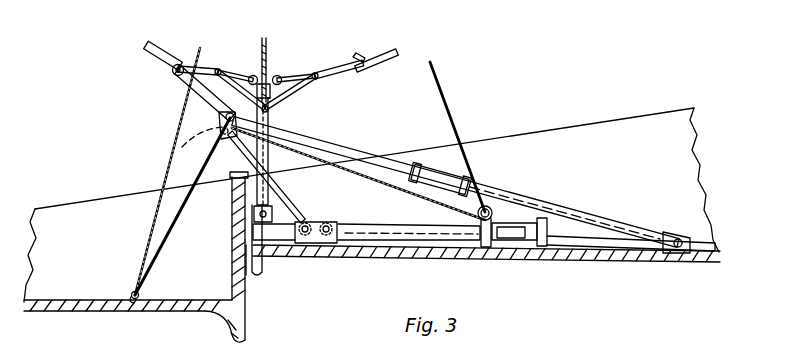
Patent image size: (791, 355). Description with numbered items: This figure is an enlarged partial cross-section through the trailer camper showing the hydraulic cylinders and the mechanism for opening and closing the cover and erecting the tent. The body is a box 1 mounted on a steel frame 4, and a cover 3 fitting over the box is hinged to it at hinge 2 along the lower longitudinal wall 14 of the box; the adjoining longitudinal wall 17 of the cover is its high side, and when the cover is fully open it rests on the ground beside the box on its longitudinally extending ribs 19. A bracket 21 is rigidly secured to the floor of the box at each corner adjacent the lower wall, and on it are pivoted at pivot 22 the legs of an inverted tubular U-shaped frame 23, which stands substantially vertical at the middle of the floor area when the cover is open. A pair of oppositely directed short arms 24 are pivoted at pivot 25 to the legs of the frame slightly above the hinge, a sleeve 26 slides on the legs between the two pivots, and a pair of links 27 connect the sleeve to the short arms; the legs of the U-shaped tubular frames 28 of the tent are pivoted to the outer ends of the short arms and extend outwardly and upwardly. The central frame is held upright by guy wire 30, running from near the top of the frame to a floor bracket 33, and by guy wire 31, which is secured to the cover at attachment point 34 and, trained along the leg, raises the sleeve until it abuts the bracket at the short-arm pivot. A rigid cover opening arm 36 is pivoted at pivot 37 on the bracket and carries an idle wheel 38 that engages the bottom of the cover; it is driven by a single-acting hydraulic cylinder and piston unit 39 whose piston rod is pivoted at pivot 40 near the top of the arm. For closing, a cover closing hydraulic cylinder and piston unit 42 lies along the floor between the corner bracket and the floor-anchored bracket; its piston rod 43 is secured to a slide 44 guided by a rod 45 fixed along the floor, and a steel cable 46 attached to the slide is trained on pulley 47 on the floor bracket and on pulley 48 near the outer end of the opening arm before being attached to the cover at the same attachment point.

The box 1 is at (360, 250).
The hinge 2 is at (238, 173).
The cover 3 is at (110, 312).
The steel frame 4 is at (255, 280).
The longitudinal wall 14 is at (240, 213).
The longitudinal wall 17 is at (233, 267).
The longitudinally extending ribs 19 is at (230, 330).
The bracket 21 is at (311, 243).
The pivot 22 is at (258, 218).
The U-shaped frame 23 is at (300, 160).
The short arms 24 is at (207, 66).
The pivot 25 is at (252, 74).
The sleeve 26 is at (270, 118).
The links 27 is at (300, 93).
The U-shaped tubular frames 28 is at (158, 42).
The guy wire 30 is at (447, 103).
The guy wire 31 is at (265, 40).
The bracket 33 is at (496, 222).
The attachment point 34 is at (130, 293).
The cover opening arm 36 is at (280, 192).
The pivot 37 is at (300, 222).
The idle wheel 38 is at (170, 67).
The hydraulic cylinder and piston unit 39 is at (473, 183).
The pivot 40 is at (226, 115).
The cover closing hydraulic cylinder and piston unit 42 is at (400, 240).
The piston rod 43 is at (535, 222).
The slide 44 is at (553, 226).
The rod 45 is at (603, 222).
The steel cable 46 is at (197, 172).
The pulley 47 is at (487, 208).
The pulley 48 is at (181, 147).